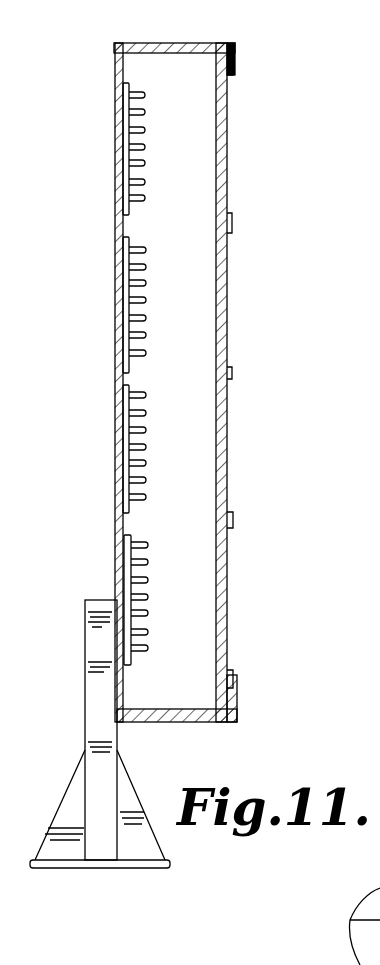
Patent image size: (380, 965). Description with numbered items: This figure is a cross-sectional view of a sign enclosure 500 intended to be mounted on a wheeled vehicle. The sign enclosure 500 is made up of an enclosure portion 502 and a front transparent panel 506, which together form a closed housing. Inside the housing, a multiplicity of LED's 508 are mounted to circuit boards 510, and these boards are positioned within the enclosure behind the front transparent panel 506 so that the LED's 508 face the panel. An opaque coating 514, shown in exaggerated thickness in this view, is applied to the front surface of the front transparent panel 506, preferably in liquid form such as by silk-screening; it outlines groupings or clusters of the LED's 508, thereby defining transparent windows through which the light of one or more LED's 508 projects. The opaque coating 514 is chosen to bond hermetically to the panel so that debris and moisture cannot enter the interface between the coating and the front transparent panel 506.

The sign enclosure 500 is at (204, 43).
The enclosure portion 502 is at (115, 233).
The front transparent panel 506 is at (229, 277).
The opaque coating 514 is at (230, 373).
The circuit boards 510 is at (120, 546).
The LED's 508 is at (150, 560).